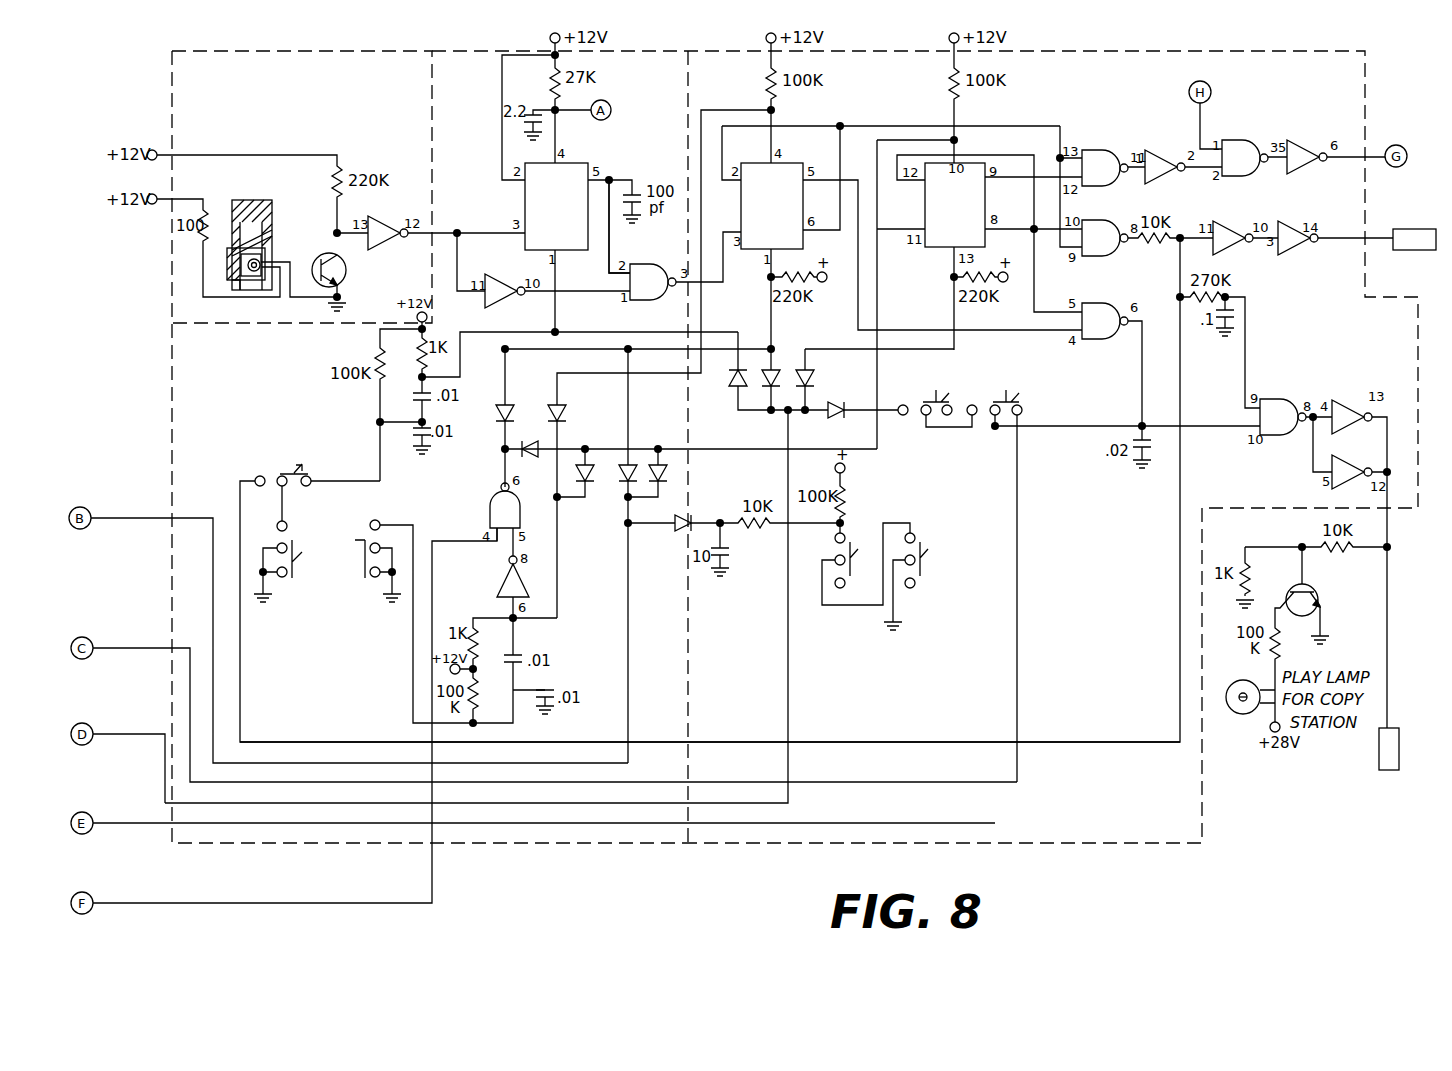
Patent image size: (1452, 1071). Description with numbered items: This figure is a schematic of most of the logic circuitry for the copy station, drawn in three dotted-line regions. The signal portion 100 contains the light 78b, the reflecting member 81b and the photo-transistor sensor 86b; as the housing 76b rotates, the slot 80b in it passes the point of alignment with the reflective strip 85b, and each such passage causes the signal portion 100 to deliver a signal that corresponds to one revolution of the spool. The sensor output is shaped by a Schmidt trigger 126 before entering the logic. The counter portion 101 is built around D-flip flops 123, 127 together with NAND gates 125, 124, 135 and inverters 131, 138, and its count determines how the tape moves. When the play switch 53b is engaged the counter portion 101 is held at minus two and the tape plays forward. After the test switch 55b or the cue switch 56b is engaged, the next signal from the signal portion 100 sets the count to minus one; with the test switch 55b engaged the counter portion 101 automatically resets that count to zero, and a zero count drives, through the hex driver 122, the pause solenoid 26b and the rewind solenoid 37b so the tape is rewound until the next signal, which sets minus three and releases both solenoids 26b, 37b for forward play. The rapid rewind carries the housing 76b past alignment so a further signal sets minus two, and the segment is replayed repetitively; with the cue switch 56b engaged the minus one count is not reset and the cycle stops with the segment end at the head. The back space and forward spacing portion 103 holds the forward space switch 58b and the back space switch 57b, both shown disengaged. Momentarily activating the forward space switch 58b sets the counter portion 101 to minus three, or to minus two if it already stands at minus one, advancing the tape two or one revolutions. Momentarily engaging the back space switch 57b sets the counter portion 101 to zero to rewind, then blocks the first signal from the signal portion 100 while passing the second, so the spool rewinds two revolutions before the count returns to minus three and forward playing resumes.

The signal portion 100 is at (252, 86).
The back space and forward spacing portion 103 is at (216, 420).
The counter portion 101 is at (1128, 818).
The reflecting member 81b is at (262, 206).
The reflective strip 85b is at (268, 227).
The housing 76b is at (262, 260).
The light 78b is at (268, 276).
The slot 80b is at (248, 284).
The sensor 86b is at (347, 272).
The hex Schmidt trigger 126 is at (384, 226).
The D-flip flop 123 is at (575, 217).
The NAND gate 125 is at (650, 272).
The D-flip flop 127 is at (789, 217).
The hex inverter 131 is at (1160, 178).
The NAND gate 135 is at (1241, 141).
The hex inverter 138 is at (1306, 144).
The hex driver 122 is at (1295, 252).
The NAND gate 124 is at (1286, 399).
The rewind solenoid 37b is at (1417, 235).
The pause solenoid 26b is at (1400, 752).
The play switch 53b is at (304, 470).
The back space switch 57b is at (306, 549).
The forward space switch 58b is at (362, 573).
The test switch 55b is at (862, 535).
The cue switch 56b is at (995, 432).